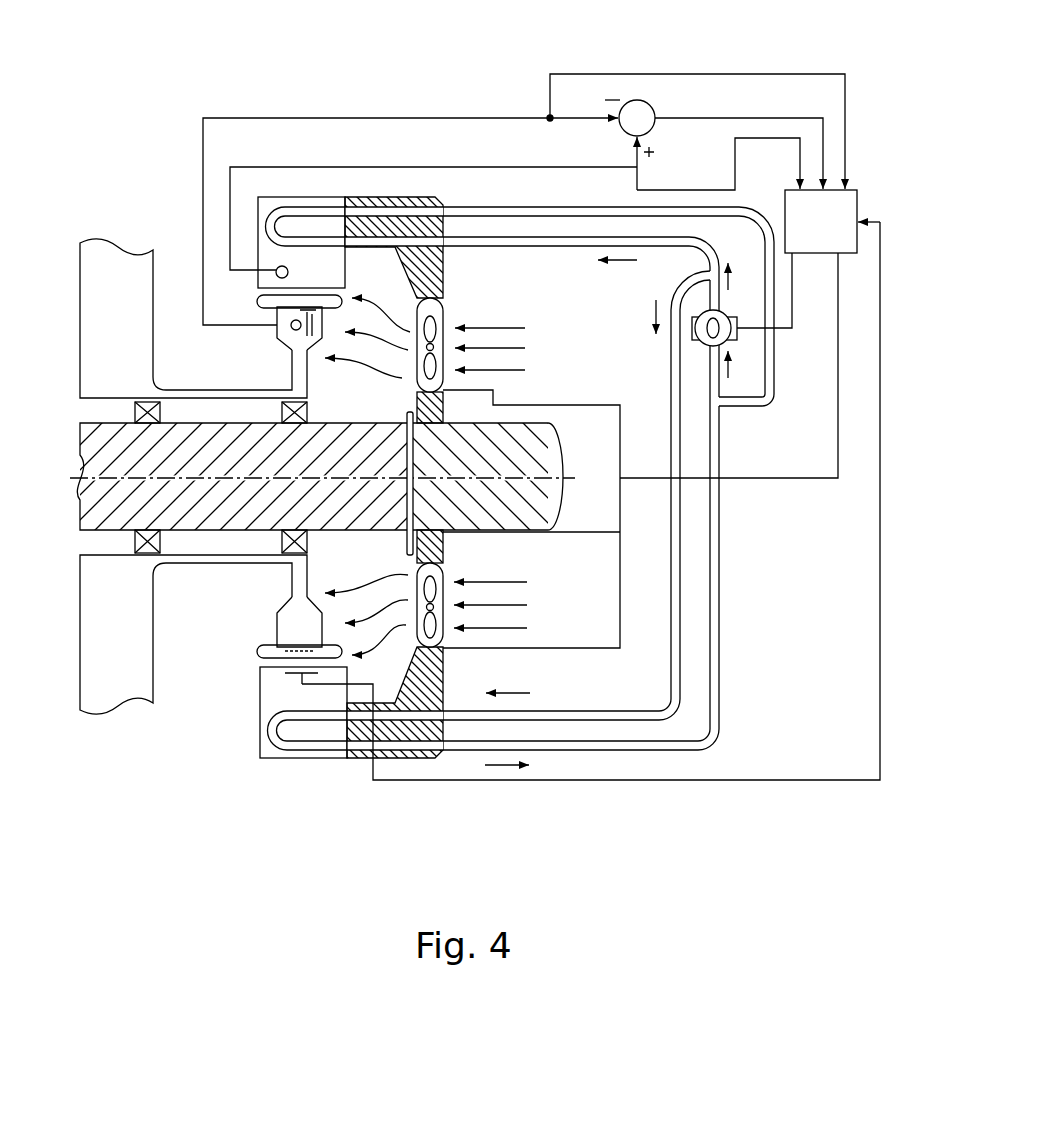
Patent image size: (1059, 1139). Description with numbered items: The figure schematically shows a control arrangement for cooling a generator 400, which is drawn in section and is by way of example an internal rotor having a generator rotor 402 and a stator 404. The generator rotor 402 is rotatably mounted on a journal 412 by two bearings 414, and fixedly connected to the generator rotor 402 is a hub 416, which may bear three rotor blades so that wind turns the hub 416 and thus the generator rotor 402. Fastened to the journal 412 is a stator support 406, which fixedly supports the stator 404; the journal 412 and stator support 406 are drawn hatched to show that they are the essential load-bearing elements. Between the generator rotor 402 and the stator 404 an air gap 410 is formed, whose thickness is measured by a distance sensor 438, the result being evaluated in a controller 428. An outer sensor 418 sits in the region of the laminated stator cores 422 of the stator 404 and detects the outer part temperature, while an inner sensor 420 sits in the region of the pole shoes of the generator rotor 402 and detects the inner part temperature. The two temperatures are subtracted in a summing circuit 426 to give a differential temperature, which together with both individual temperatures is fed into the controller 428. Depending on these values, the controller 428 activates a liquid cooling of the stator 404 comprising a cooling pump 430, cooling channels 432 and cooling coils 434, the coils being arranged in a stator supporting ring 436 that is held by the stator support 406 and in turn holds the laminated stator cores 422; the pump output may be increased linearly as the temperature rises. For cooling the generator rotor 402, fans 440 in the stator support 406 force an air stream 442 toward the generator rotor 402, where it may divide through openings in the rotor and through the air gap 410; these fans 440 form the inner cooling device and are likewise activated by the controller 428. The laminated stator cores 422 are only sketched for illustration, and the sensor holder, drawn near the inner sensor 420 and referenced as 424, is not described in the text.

The generator 400 is at (374, 789).
The generator rotor 402 is at (290, 600).
The stator 404 is at (260, 684).
The stator support 406 is at (440, 541).
The air gap 410 is at (252, 297).
The journal 412 is at (92, 492).
The bearings 414 is at (302, 527).
The hub 416 is at (93, 273).
The outer sensor 418 is at (230, 268).
The inner sensor 420 is at (290, 336).
The laminated stator cores 422 is at (340, 273).
The sensor holder 424 is at (277, 333).
The summing circuit 426 is at (637, 100).
The controller 428 is at (855, 204).
The cooling pump 430 is at (722, 333).
The cooling channels 432 is at (720, 548).
The cooling coils 434 is at (327, 207).
The stator supporting ring 436 is at (270, 207).
The distance sensor 438 is at (287, 684).
The fans 440 is at (442, 318).
The air stream 442 is at (518, 340).